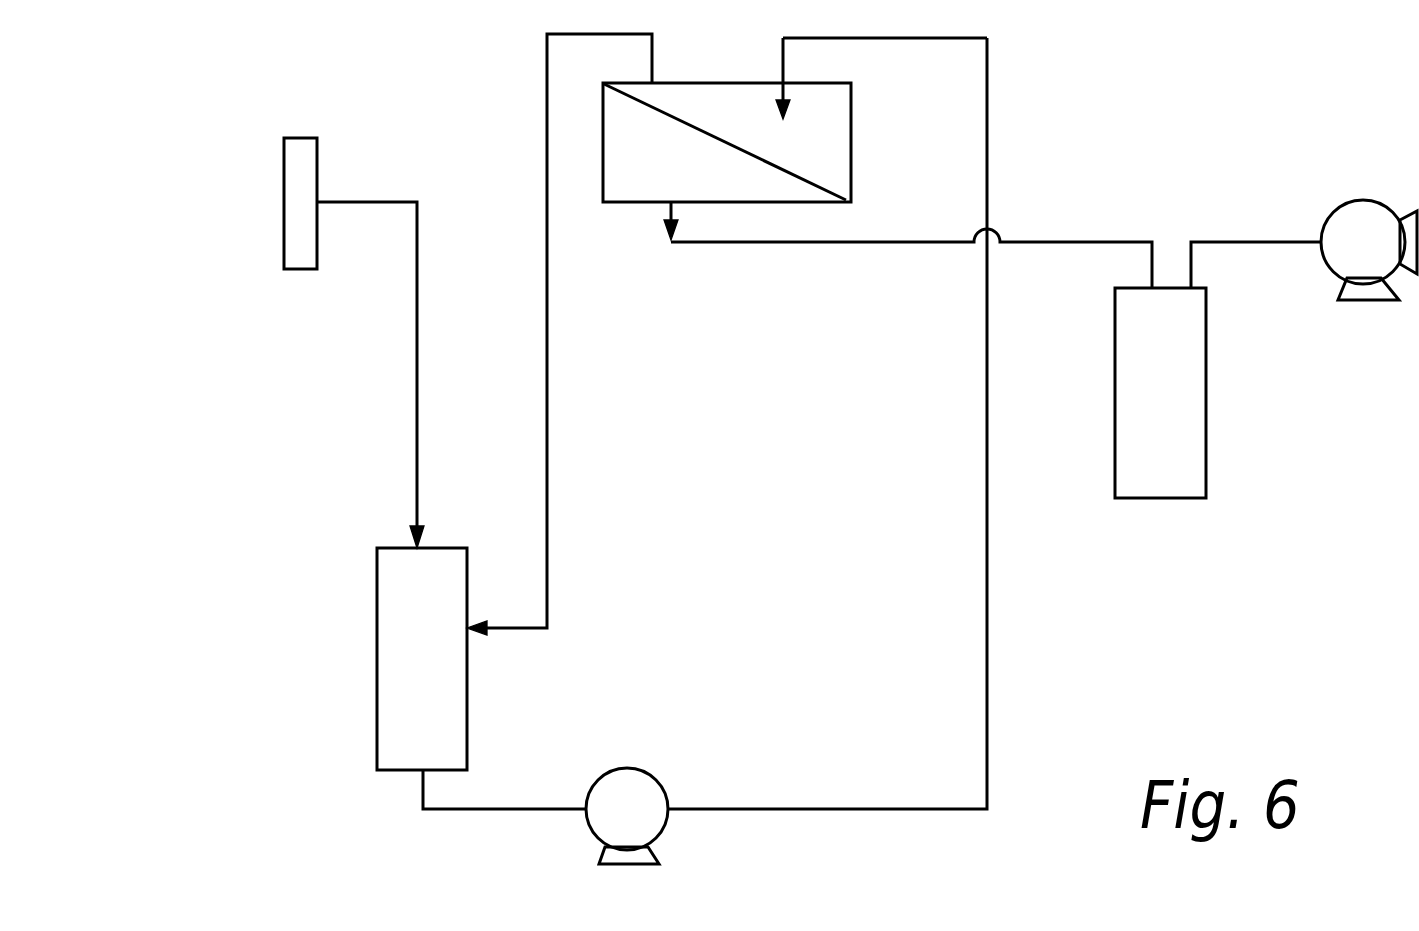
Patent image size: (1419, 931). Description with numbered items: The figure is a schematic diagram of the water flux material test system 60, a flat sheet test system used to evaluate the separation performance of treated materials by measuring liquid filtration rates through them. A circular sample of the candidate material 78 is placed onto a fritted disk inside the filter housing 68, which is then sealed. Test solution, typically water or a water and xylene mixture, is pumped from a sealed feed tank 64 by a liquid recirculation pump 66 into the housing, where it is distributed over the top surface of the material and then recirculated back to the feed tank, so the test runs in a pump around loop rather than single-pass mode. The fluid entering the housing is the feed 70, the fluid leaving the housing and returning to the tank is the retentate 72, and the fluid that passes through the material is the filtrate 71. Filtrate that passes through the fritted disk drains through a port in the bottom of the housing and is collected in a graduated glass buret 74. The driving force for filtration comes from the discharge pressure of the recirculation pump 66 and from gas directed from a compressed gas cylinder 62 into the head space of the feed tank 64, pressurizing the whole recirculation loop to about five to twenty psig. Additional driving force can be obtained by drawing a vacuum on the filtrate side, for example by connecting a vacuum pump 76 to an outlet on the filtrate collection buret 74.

The fluid treatment system 60 is at (280, 768).
The compressed gas cylinder 62 is at (284, 197).
The sealed feed tank 64 is at (377, 625).
The liquid recirculation pump 66 is at (587, 826).
The filter housing 68 is at (851, 123).
The feed 70 is at (783, 60).
The filtrate 71 is at (632, 203).
The retentate 72 is at (595, 35).
The graduated glass buret 74 is at (1171, 499).
The vacuum pump 76 is at (1355, 202).
The candidate material 78 is at (820, 188).